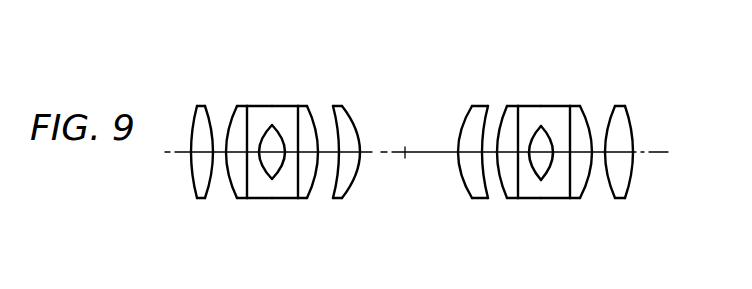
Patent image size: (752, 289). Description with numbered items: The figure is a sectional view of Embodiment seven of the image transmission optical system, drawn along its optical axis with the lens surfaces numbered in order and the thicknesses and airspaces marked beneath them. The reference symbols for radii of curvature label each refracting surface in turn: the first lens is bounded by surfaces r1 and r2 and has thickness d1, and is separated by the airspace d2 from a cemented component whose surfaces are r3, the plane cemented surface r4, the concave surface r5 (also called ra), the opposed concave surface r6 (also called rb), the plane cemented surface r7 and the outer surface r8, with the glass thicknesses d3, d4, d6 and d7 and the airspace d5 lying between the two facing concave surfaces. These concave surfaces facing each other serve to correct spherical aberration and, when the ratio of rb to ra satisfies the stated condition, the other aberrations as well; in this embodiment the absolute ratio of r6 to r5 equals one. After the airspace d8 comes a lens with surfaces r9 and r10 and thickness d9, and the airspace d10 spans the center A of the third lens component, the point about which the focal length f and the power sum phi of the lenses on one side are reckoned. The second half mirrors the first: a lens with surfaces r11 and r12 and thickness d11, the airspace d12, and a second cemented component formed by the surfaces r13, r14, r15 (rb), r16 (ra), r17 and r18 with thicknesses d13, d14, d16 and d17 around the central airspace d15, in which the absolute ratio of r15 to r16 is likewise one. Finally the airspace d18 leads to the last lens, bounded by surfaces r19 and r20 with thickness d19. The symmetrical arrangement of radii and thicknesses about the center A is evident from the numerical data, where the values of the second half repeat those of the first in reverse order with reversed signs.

The center of the third lens component A is at (405, 163).
The radius of curvature of the first lens surface r1 is at (192, 118).
The radius of curvature of the second lens surface r2 is at (212, 112).
The radius of curvature of the third lens surface r3 is at (237, 117).
The radius of curvature of the fourth lens surface r4 is at (247, 116).
The radius of curvature of the fifth lens surface r5 is at (266, 128).
The radius of curvature of the sixth lens surface r6 is at (281, 128).
The radius of curvature of the seventh lens surface r7 is at (298, 114).
The radius of curvature of the eighth lens surface r8 is at (317, 118).
The radius of curvature of the ninth lens surface r9 is at (333, 116).
The radius of curvature of the tenth lens surface r10 is at (353, 116).
The radius of curvature of the eleventh lens surface r11 is at (460, 130).
The radius of curvature of the twelfth lens surface r12 is at (483, 112).
The radius of curvature of the thirteenth lens surface r13 is at (502, 116).
The radius of curvature of the fourteenth lens surface r14 is at (517, 116).
The radius of curvature of the fifteenth lens surface r15 is at (535, 128).
The radius of curvature of the sixteenth lens surface r16 is at (550, 128).
The radius of curvature of the seventeenth lens surface r17 is at (570, 116).
The radius of curvature of the eighteenth lens surface r18 is at (590, 128).
The radius of curvature of the nineteenth lens surface r19 is at (606, 118).
The radius of curvature of the twentieth lens surface r20 is at (634, 124).
The thickness of the first lens d1 is at (203, 153).
The airspace between the first and second lenses d2 is at (222, 153).
The thickness of the second lens d3 is at (242, 158).
The thickness of the third lens d4 is at (256, 158).
The airspace between the facing concave surfaces d5 is at (272, 179).
The thickness of the fourth lens d6 is at (292, 158).
The thickness of the fifth lens d7 is at (305, 158).
The airspace between the cemented component and the sixth lens d8 is at (325, 158).
The thickness of the sixth lens d9 is at (351, 182).
The airspace across the center of the third lens component d10 is at (378, 158).
The thickness of the seventh lens d11 is at (463, 160).
The airspace between the seventh lens and the cemented component d12 is at (492, 163).
The thickness of the eighth lens d13 is at (503, 160).
The thickness of the ninth lens d14 is at (527, 160).
The airspace between the facing concave surfaces d15 is at (541, 181).
The thickness of the tenth lens d16 is at (563, 160).
The thickness of the eleventh lens d17 is at (580, 160).
The airspace between the cemented component and the twelfth lens d18 is at (600, 160).
The thickness of the twelfth lens d19 is at (633, 165).